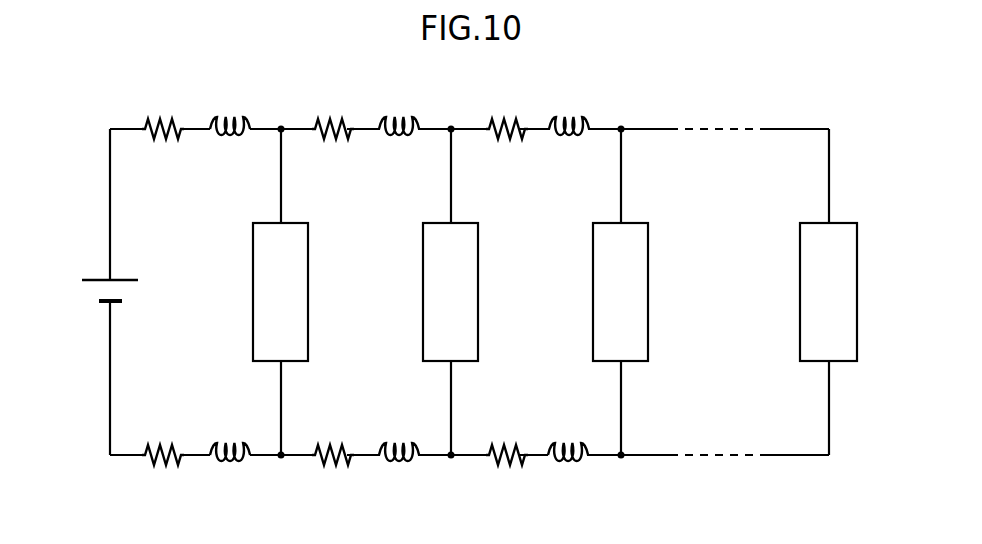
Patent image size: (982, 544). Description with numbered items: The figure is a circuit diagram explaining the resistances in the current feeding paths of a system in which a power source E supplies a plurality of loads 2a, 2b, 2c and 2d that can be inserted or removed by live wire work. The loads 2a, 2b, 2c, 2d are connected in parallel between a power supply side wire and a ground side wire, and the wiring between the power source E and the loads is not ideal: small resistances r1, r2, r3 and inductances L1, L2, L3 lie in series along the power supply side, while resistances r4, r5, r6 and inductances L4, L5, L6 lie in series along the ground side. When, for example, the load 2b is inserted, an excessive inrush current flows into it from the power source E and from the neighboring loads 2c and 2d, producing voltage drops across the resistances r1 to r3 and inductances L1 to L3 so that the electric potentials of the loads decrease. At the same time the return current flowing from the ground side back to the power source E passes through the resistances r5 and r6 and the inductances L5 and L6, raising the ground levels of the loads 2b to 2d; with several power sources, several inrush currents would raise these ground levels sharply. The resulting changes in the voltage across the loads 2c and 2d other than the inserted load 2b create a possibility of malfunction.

The power source E is at (97, 290).
The resistance r1 is at (163, 115).
The resistance r2 is at (333, 115).
The resistance r3 is at (507, 115).
The resistance r4 is at (507, 440).
The resistance r5 is at (333, 440).
The resistance r6 is at (163, 440).
The inductance L1 is at (230, 113).
The inductance L2 is at (399, 113).
The inductance L3 is at (569, 113).
The inductance L4 is at (568, 438).
The inductance L5 is at (399, 438).
The inductance L6 is at (230, 438).
The load 2a is at (253, 267).
The load 2b is at (423, 265).
The load 2c is at (593, 255).
The load 2d is at (800, 266).